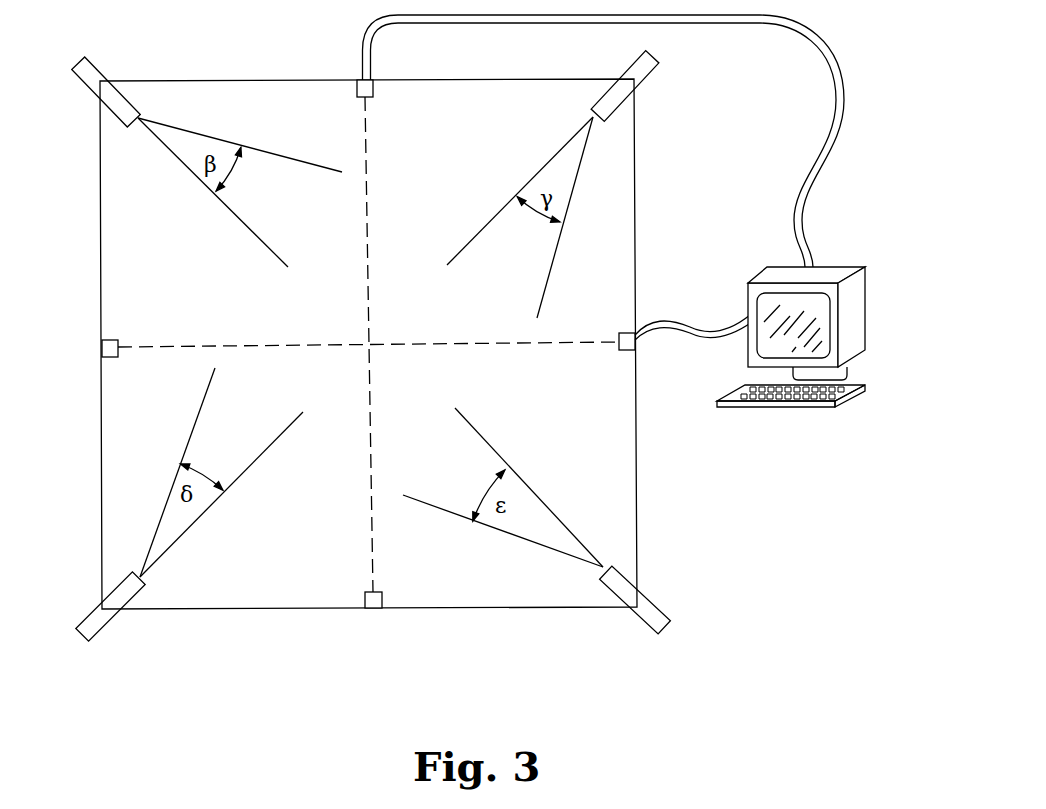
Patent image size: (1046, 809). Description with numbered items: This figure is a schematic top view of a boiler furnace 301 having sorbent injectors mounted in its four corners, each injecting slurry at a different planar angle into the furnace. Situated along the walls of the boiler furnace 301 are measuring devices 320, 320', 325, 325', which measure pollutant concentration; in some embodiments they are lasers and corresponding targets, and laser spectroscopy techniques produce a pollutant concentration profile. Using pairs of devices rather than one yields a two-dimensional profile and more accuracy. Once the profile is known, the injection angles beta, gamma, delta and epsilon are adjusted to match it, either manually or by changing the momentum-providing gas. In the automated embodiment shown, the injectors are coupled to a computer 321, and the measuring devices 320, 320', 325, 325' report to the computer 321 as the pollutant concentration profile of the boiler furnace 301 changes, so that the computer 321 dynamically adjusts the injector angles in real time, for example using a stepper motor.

The boiler furnace 301 is at (350, 328).
The measuring device 320 is at (394, 101).
The measuring device 320' is at (371, 631).
The measuring device 325 is at (79, 349).
The measuring device 325' is at (596, 362).
The computer 321 is at (763, 268).